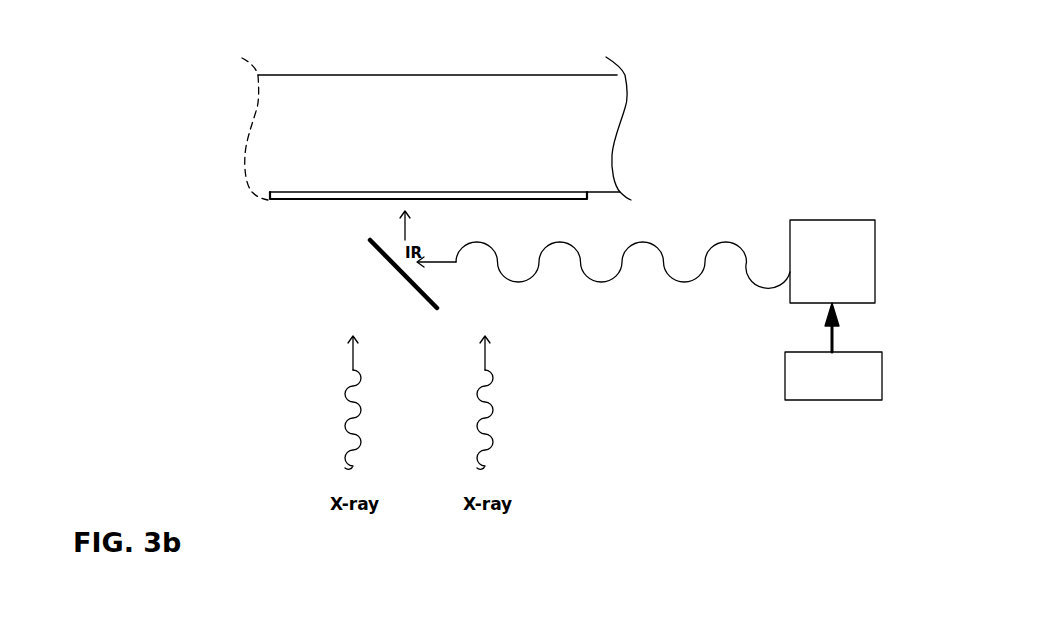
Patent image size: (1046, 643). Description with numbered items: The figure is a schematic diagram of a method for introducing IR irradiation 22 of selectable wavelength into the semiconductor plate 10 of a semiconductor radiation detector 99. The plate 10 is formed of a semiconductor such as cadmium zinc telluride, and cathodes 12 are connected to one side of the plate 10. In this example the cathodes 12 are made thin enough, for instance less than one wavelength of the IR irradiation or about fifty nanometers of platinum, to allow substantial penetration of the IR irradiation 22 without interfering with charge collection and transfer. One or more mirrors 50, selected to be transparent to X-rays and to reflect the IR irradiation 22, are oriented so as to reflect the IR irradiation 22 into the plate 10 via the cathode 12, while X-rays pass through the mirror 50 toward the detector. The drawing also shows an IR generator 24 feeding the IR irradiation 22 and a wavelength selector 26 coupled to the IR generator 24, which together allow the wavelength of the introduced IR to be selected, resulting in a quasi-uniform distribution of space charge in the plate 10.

The semiconductor plate 10 is at (287, 108).
The cathodes 12 is at (322, 200).
The semiconductor radiation detector 99 is at (210, 210).
The mirror 50 is at (410, 283).
The IR irradiation 22 is at (622, 270).
The IR generator 24 is at (812, 220).
The wavelength selector 26 is at (785, 378).